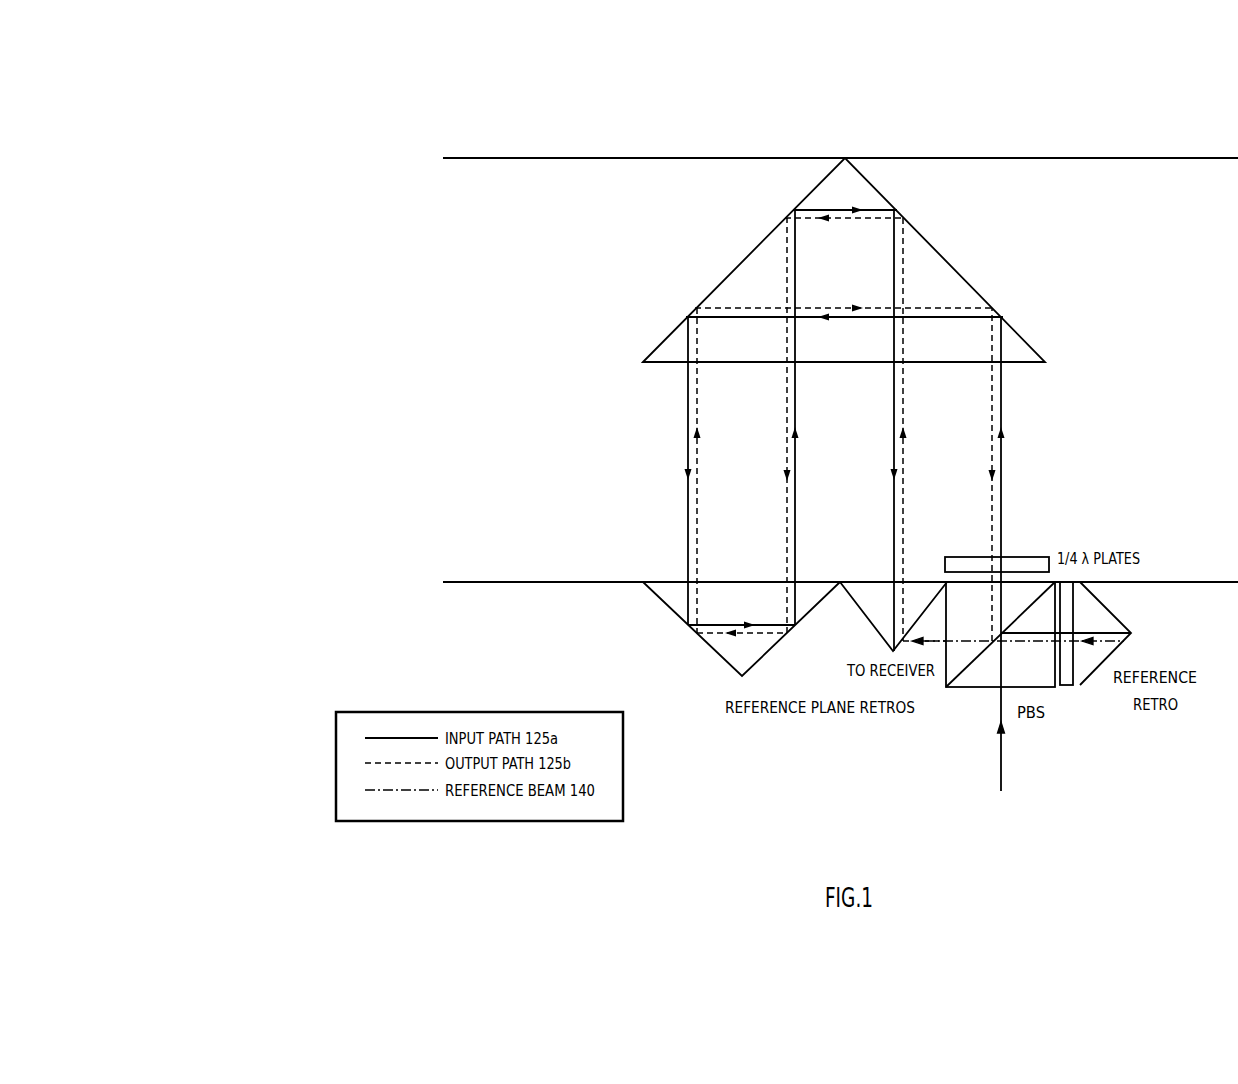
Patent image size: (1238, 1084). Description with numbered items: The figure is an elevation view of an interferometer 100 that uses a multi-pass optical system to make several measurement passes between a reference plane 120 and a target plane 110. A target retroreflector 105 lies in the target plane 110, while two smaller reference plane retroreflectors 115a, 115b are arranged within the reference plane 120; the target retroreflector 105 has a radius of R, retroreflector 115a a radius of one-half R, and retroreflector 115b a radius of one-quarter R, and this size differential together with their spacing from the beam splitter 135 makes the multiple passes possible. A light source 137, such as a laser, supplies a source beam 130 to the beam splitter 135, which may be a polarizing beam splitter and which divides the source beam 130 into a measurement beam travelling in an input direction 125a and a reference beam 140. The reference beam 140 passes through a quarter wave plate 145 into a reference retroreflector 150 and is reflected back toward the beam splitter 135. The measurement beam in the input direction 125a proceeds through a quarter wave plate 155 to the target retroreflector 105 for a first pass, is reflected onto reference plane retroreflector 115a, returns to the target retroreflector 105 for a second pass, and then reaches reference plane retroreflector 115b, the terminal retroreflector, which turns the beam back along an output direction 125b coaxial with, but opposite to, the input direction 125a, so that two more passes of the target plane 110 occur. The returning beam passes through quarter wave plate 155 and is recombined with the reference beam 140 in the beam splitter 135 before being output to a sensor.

The interferometer 100 is at (372, 133).
The target retroreflector 105 is at (959, 272).
The target plane 110 is at (1165, 160).
The reference plane retroreflector 115a is at (658, 597).
The reference plane retroreflector 115b is at (858, 605).
The reference plane 120 is at (508, 580).
The measurement beam in the input direction 125a is at (1003, 477).
The measurement beam in the output direction 125b is at (993, 385).
The source beam 130 is at (1002, 760).
The beam splitter 135 is at (986, 688).
The light source 137 is at (1003, 845).
The reference beam 140 is at (1130, 638).
The quarter wave plate 145 is at (1067, 686).
The reference retroreflector 150 is at (1113, 614).
The quarter wave plate 155 is at (1015, 556).